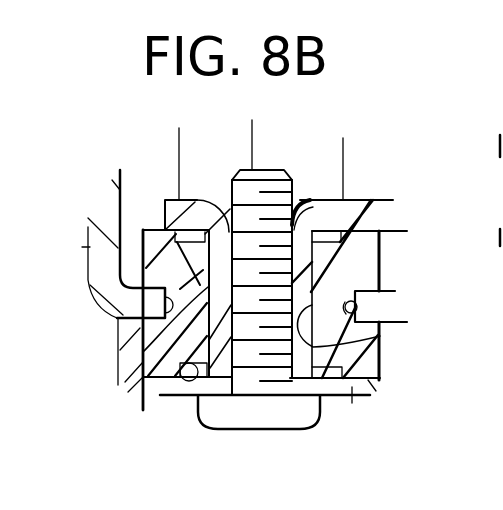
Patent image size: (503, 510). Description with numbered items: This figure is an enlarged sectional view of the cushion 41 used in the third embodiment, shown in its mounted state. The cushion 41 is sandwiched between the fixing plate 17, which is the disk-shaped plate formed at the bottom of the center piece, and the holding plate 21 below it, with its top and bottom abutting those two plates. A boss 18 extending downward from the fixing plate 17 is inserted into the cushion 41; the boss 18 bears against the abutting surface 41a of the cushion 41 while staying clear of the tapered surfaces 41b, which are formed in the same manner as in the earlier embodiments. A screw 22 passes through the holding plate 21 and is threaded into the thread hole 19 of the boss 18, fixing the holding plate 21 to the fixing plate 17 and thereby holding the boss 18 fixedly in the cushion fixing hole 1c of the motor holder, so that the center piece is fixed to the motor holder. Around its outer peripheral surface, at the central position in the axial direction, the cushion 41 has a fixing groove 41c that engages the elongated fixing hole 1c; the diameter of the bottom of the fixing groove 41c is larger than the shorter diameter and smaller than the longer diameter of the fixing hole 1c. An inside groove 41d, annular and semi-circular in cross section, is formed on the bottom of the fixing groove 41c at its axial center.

The fixing plate 17 is at (388, 202).
The cushion 41 is at (138, 248).
The abutting surface 41a is at (380, 336).
The tapered surfaces 41b is at (202, 252).
The fixing groove 41c is at (365, 292).
The inside groove 41d is at (357, 306).
The cushion fixing hole 1c is at (142, 356).
The boss 18 is at (327, 390).
The thread hole 19 is at (250, 372).
The holding plate 21 is at (352, 400).
The screw 22 is at (215, 412).